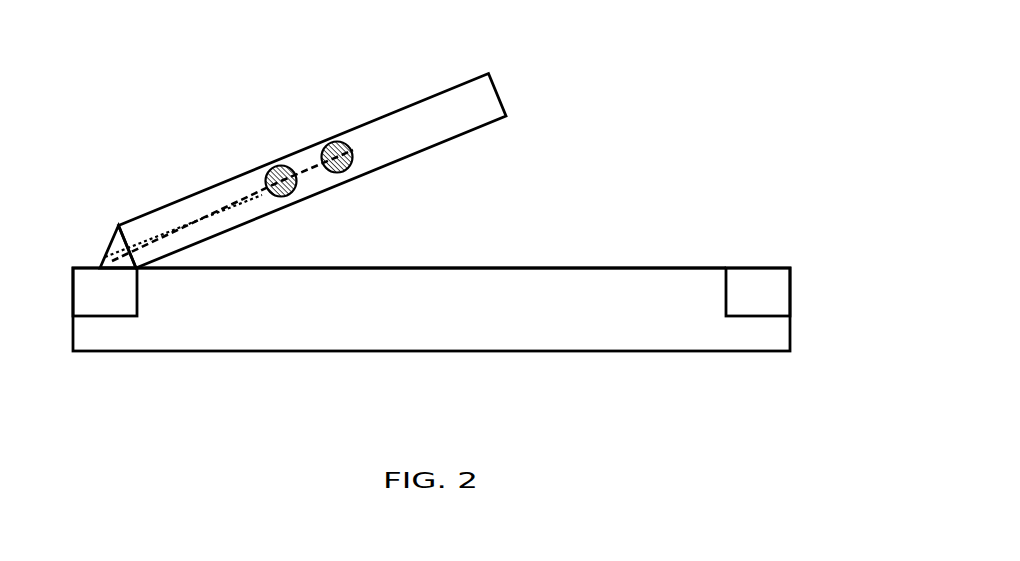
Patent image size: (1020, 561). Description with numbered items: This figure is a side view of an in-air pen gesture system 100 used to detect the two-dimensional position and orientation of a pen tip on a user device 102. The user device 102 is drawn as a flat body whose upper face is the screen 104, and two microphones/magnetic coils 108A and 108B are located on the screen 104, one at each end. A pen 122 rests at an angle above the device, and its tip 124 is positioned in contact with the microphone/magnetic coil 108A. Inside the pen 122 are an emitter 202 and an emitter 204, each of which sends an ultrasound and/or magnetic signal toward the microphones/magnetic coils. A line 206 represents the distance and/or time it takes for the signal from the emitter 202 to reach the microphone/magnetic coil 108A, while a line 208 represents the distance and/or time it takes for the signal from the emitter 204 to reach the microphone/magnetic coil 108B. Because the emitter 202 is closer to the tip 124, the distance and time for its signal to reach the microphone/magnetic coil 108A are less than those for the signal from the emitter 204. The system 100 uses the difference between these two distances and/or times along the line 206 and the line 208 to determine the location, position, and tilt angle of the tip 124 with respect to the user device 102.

The in-air pen gesture system 100 is at (664, 76).
The user device 102 is at (553, 351).
The screen 104 is at (603, 268).
The microphone/magnetic coil 108A is at (105, 316).
The microphone/magnetic coil 108B is at (757, 316).
The pen 122 is at (447, 142).
The tip 124 is at (108, 242).
The emitter 202 is at (298, 193).
The emitter 204 is at (350, 173).
The line 206 is at (148, 238).
The line 208 is at (170, 237).